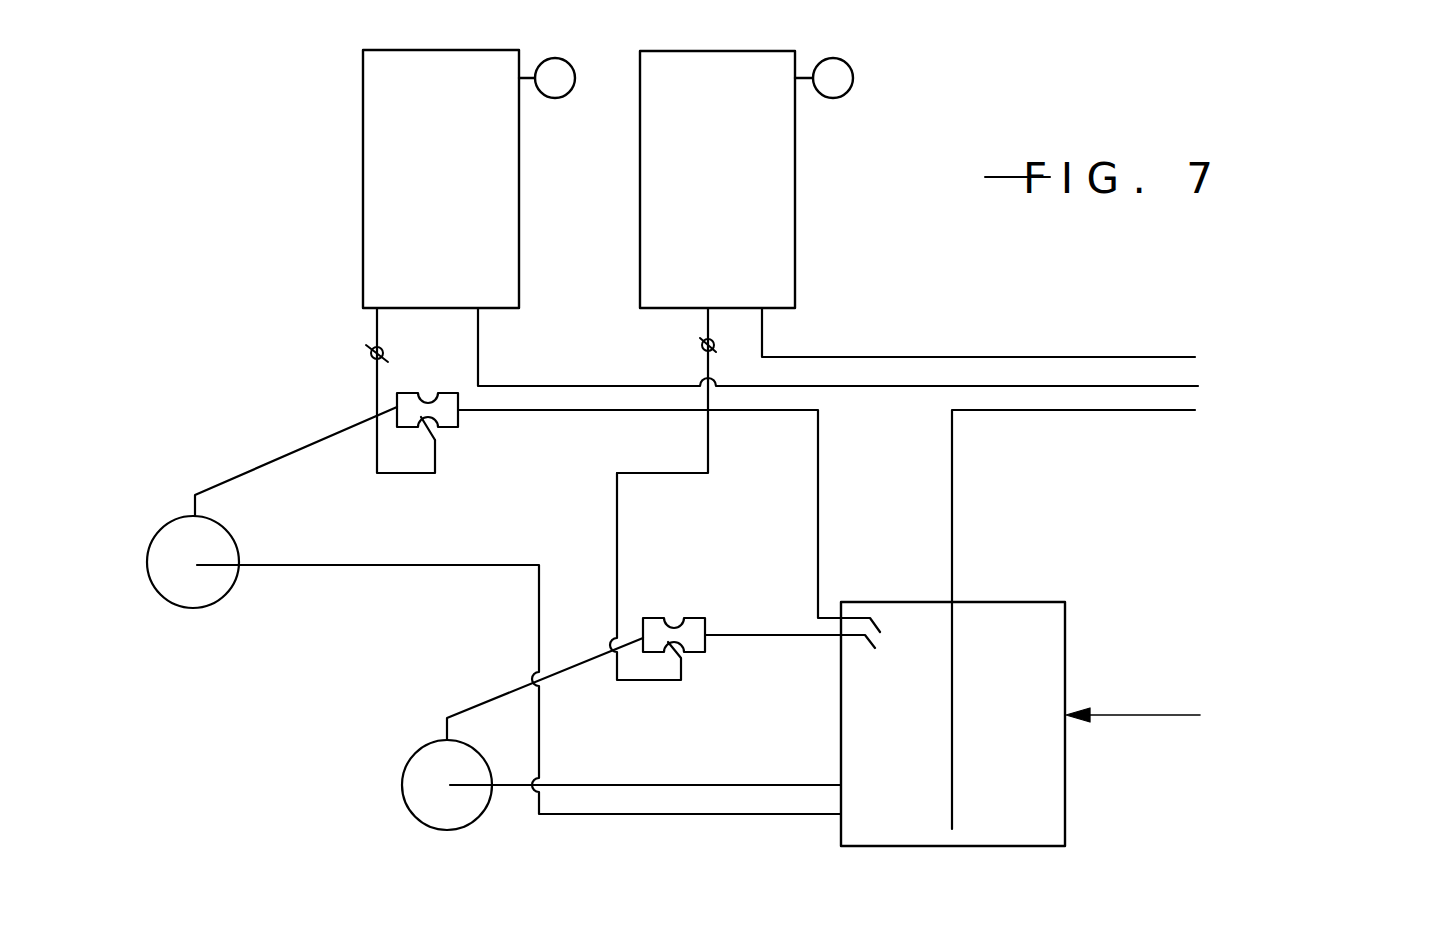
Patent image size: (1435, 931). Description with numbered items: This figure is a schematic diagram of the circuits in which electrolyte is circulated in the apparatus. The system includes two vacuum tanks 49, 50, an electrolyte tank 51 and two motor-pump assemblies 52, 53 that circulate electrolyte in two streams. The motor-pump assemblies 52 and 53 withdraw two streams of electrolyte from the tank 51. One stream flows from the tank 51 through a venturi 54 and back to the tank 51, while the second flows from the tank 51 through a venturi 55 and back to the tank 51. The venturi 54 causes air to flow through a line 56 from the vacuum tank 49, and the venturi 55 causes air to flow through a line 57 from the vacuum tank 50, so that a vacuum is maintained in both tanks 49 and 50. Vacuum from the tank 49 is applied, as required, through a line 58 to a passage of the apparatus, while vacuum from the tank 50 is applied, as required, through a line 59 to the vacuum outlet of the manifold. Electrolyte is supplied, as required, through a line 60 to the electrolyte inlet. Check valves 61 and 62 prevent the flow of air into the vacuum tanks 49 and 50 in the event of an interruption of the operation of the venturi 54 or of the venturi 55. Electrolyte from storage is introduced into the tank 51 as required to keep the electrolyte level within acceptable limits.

The vacuum tank 49 is at (795, 200).
The vacuum tank 50 is at (519, 208).
The electrolyte tank 51 is at (1065, 783).
The motor-pump assembly 52 is at (158, 538).
The motor-pump assembly 53 is at (404, 771).
The venturi 54 is at (697, 617).
The venturi 55 is at (452, 427).
The line 56 is at (618, 523).
The line 57 is at (377, 388).
The line 58 is at (843, 357).
The line 59 is at (540, 386).
The line 60 is at (952, 540).
The check valve 61 is at (702, 345).
The check valve 62 is at (370, 350).